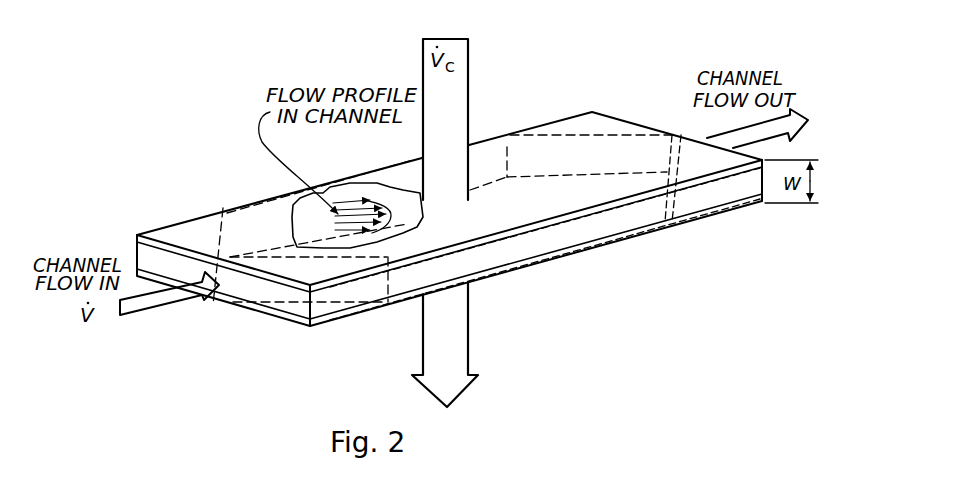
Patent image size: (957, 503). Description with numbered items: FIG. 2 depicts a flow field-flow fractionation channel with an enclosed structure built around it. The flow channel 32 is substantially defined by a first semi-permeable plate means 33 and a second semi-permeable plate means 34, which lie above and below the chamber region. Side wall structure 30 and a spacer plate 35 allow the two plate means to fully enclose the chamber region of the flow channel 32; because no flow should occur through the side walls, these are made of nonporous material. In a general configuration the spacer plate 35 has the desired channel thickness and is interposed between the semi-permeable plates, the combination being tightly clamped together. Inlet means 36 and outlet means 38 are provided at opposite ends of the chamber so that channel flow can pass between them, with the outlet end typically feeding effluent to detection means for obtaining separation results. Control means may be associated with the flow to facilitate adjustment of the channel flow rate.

The side wall structure 30 is at (506, 132).
The flow channel 32 is at (317, 223).
The first semi-permeable plate means 33 is at (584, 190).
The second semi-permeable plate means 34 is at (576, 259).
The spacer plate 35 is at (722, 194).
The inlet means 36 is at (217, 293).
The outlet means 38 is at (672, 150).